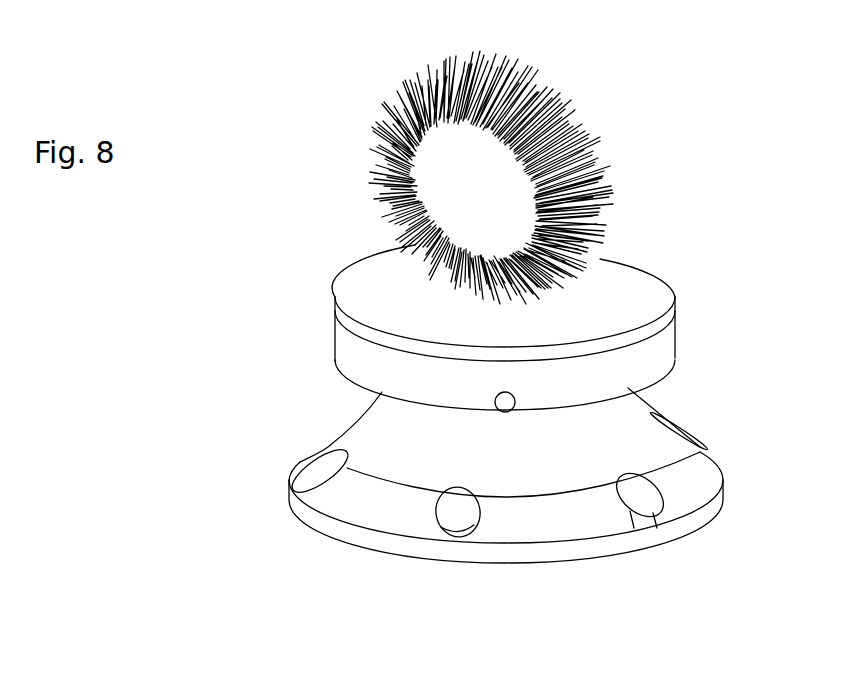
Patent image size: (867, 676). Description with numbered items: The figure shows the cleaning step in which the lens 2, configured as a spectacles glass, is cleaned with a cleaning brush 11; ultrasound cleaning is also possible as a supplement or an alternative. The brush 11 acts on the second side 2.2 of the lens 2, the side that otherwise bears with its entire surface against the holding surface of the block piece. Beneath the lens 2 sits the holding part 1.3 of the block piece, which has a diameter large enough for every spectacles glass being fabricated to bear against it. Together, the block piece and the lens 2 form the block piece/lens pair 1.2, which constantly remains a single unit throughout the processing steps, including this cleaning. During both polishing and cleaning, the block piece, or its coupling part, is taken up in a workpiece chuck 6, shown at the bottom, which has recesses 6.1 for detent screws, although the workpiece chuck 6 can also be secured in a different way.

The cleaning brush 11 is at (507, 191).
The lens 2 is at (498, 288).
The second side 2.2 is at (613, 279).
The block piece/lens pair 1.2 is at (489, 313).
The holding part 1.3 is at (363, 352).
The workpiece chuck 6 is at (495, 492).
The recesses 6.1 is at (460, 514).